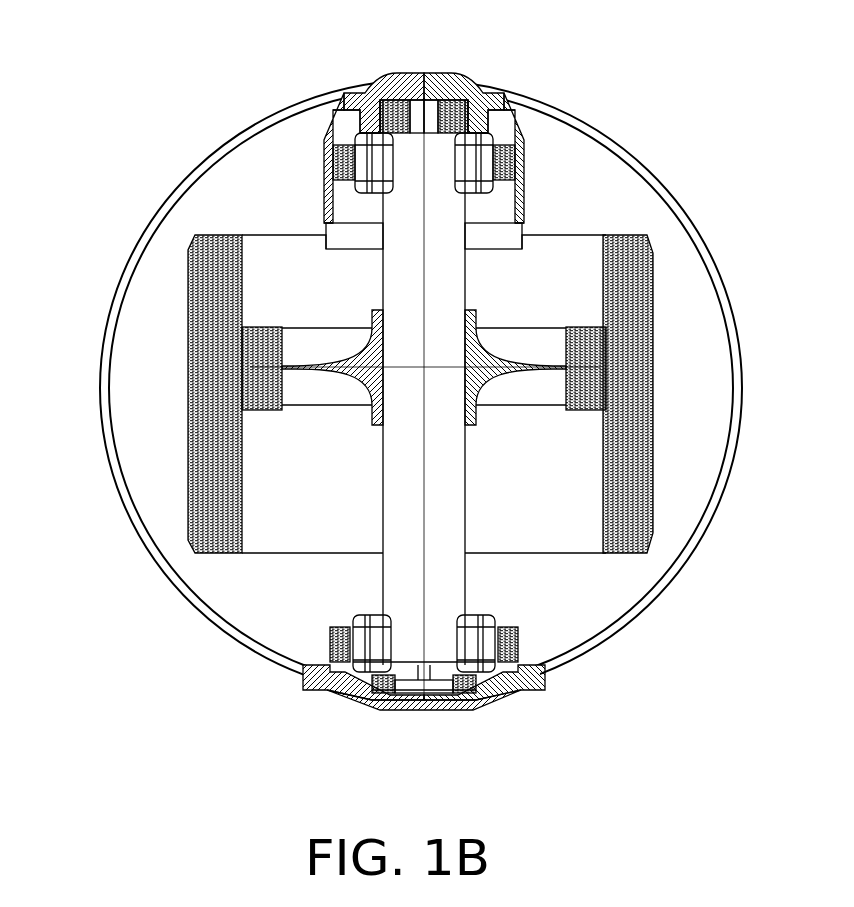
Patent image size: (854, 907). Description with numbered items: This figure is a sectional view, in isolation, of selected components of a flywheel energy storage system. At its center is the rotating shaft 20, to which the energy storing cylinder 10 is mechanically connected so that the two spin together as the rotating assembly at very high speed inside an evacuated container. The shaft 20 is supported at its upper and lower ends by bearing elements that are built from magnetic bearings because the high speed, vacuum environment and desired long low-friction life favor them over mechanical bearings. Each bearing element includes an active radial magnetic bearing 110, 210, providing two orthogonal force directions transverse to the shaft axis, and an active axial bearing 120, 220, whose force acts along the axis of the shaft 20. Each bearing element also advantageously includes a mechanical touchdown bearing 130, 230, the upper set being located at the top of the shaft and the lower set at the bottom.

The energy storing cylinder 10 is at (185, 322).
The rotating shaft 20 is at (383, 497).
The radial magnetic bearing 110 is at (520, 158).
The axial bearing 120 is at (345, 103).
The mechanical touchdown bearing 130 is at (472, 85).
The radial magnetic bearing 210 is at (537, 668).
The axial bearing 220 is at (490, 705).
The mechanical touchdown bearing 230 is at (378, 706).